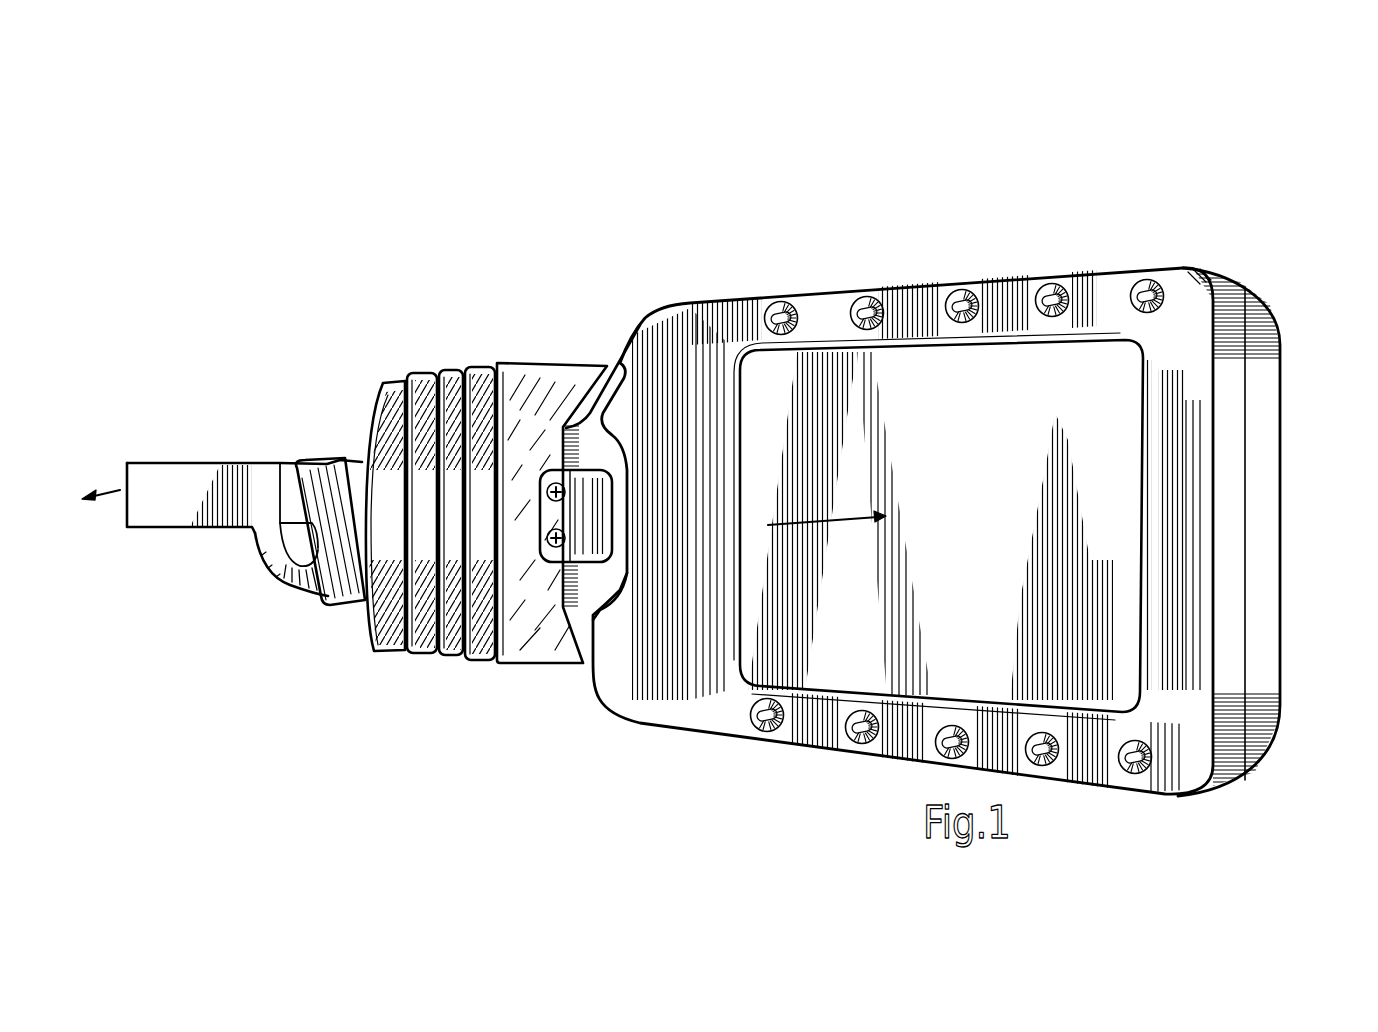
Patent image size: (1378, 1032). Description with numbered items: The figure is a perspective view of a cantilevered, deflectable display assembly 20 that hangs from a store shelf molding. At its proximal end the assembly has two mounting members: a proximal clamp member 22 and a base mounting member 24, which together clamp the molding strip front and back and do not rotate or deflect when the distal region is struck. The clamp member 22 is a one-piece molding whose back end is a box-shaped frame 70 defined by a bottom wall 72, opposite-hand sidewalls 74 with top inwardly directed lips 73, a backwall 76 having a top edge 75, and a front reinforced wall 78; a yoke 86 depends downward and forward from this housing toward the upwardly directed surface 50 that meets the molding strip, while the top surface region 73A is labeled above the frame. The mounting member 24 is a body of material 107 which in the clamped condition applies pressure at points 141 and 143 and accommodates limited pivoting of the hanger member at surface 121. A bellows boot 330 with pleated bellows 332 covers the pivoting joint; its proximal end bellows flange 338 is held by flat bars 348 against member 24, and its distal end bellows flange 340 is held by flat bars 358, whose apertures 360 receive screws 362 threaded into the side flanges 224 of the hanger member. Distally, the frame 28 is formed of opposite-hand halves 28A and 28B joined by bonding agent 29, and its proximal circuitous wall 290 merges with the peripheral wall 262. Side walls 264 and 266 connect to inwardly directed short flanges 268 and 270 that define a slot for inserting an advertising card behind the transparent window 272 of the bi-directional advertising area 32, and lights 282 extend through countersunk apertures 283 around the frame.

The display assembly 20 is at (792, 200).
The proximal mounting member 22 is at (255, 639).
The mounting member 24 is at (365, 605).
The frame segment 28 is at (1278, 532).
The frame half 28A is at (1278, 532).
The frame half 28B is at (1273, 532).
The bonding agent 29 is at (1268, 532).
The bi-directional advertising area 32 is at (1065, 372).
The upwardly directed surface 50 is at (298, 577).
The box-shaped frame 70 is at (237, 473).
The bottom wall 72 is at (192, 528).
The inwardly directed lip 73 is at (237, 473).
The handle top edge 73A is at (237, 512).
The sidewall 74 is at (237, 473).
The top edge 75 is at (237, 501).
The backwall 76 is at (237, 539).
The front reinforced wall 78 is at (298, 587).
The yoke 86 is at (255, 639).
The body of material 107 is at (298, 620).
The surface 121 is at (298, 557).
The pressure applying point 141 is at (298, 567).
The pressure applying point 143 is at (318, 605).
The side flange 224 is at (600, 605).
The peripheral wall 262 is at (940, 511).
The side wall 264 is at (1078, 297).
The side wall 266 is at (1282, 612).
The inwardly directed short flange 268 is at (985, 511).
The inwardly directed short flange 270 is at (937, 526).
The transparent window 272 is at (961, 567).
The light 282 is at (940, 772).
The countersunk aperture 283 is at (755, 738).
The circuitous wall 290 is at (585, 366).
The boot 330 is at (474, 503).
The bellows 332 is at (447, 655).
The proximal end bellows flange 338 is at (372, 654).
The distal end bellows flange 340 is at (525, 503).
The flat bar 348 is at (298, 547).
The flat bar 358 is at (608, 521).
The aperture 360 is at (567, 540).
The screw 362 is at (608, 521).